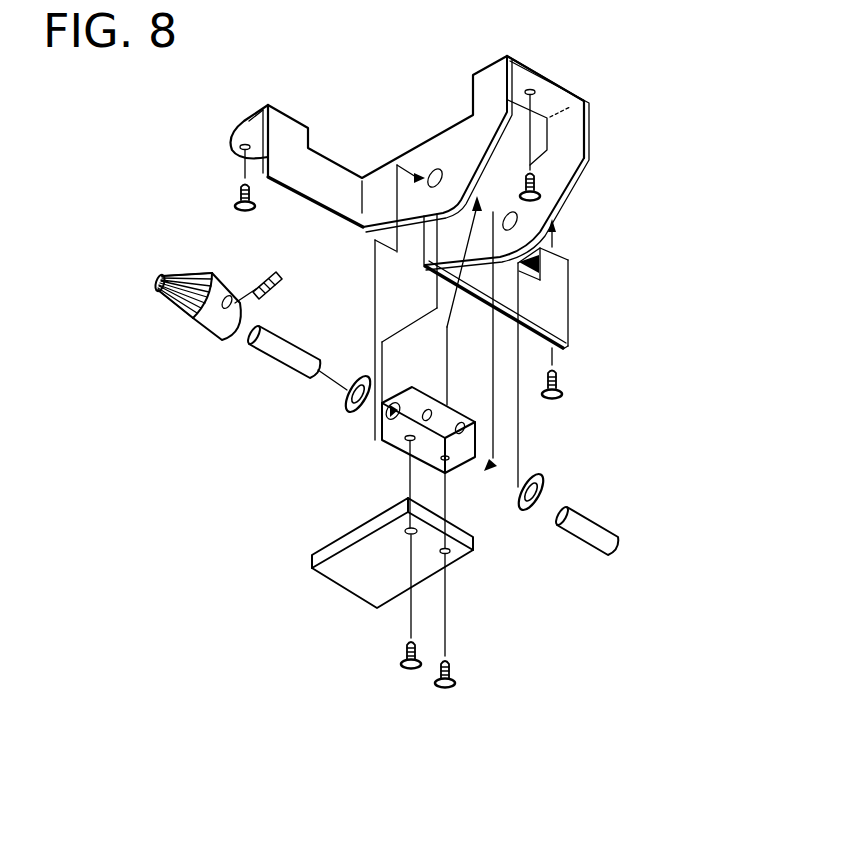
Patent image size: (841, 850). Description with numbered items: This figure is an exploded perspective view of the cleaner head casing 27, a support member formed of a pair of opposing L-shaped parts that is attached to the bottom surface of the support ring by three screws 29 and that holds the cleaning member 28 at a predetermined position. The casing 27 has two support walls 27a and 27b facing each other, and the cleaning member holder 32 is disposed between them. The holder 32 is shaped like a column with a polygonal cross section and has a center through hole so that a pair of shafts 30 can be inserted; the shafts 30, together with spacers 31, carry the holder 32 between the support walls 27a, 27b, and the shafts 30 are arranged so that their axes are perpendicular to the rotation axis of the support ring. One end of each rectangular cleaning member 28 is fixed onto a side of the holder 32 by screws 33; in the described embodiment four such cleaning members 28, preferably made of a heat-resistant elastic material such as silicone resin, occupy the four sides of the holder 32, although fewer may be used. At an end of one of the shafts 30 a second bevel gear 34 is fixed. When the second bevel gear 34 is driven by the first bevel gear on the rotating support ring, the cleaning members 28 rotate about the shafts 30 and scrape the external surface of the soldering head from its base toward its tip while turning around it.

The cleaner head casing 27 is at (472, 265).
The support wall 27a is at (465, 138).
The support wall 27b is at (585, 163).
The cleaning member 28 is at (358, 588).
The screws 29 is at (238, 208).
The shafts 30 is at (272, 357).
The spacers 31 is at (343, 398).
The cleaning member holder 32 is at (383, 442).
The screws 33 is at (433, 678).
The second bevel gear 34 is at (170, 323).